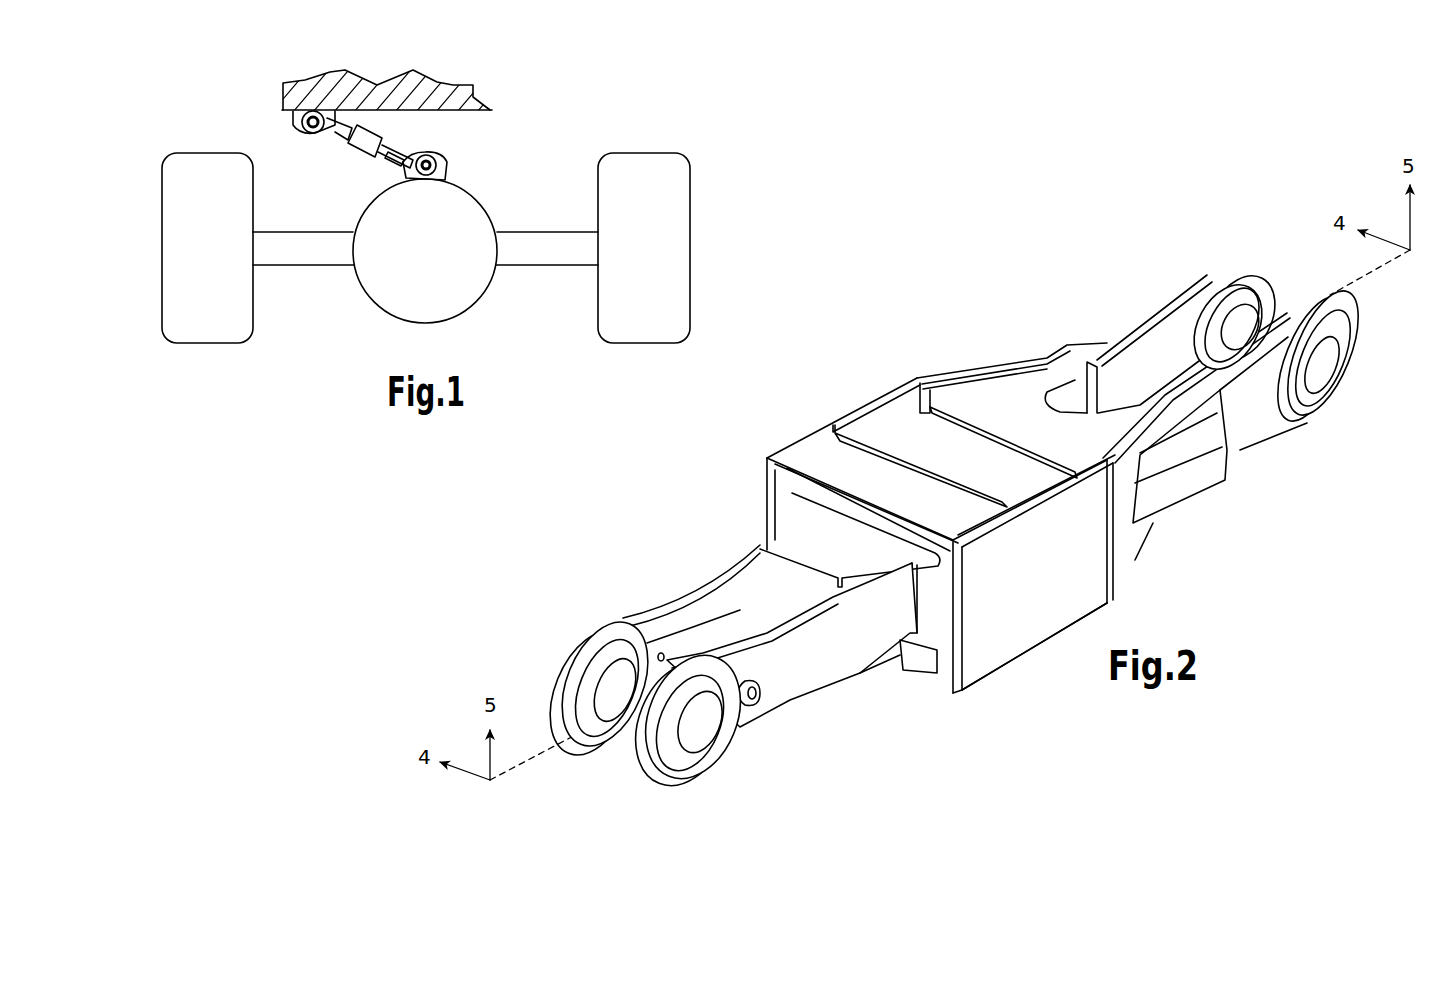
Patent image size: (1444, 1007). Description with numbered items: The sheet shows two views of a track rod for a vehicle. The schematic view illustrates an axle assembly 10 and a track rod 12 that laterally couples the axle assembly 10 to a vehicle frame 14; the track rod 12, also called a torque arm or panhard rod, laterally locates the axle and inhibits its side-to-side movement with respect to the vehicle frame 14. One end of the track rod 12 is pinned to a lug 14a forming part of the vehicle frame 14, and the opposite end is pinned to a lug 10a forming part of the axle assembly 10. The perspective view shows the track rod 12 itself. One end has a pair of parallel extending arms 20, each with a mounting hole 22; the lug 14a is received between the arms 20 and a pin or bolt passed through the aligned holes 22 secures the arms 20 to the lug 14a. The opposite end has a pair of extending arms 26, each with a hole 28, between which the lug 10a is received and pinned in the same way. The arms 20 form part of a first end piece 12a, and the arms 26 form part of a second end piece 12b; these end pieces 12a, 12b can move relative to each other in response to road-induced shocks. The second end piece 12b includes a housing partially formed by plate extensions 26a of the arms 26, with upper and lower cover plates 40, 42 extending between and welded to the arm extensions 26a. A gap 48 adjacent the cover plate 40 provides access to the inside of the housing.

In FIG. 1, the axle assembly 10 is at (345, 312).
In FIG. 1, the lug 10a is at (440, 163).
In FIG. 1, the track rod 12 is at (428, 130).
In FIG. 2, the track rod 12 is at (978, 320).
In FIG. 2, the first end piece 12a is at (700, 556).
In FIG. 2, the second end piece/housing 12b is at (1172, 550).
In FIG. 1, the vehicle frame 14 is at (507, 90).
In FIG. 1, the lug 14a is at (293, 122).
In FIG. 2, the arms 20 is at (745, 627).
In FIG. 2, the mounting hole 22 is at (625, 620).
In FIG. 2, the arms 26 is at (1140, 367).
In FIG. 2, the plate extensions 26a is at (1050, 590).
In FIG. 2, the hole 28 is at (1258, 262).
In FIG. 2, the upper cover plate 40 is at (882, 418).
In FIG. 2, the lower cover plate 42 is at (820, 453).
In FIG. 2, the gap 48 is at (935, 405).